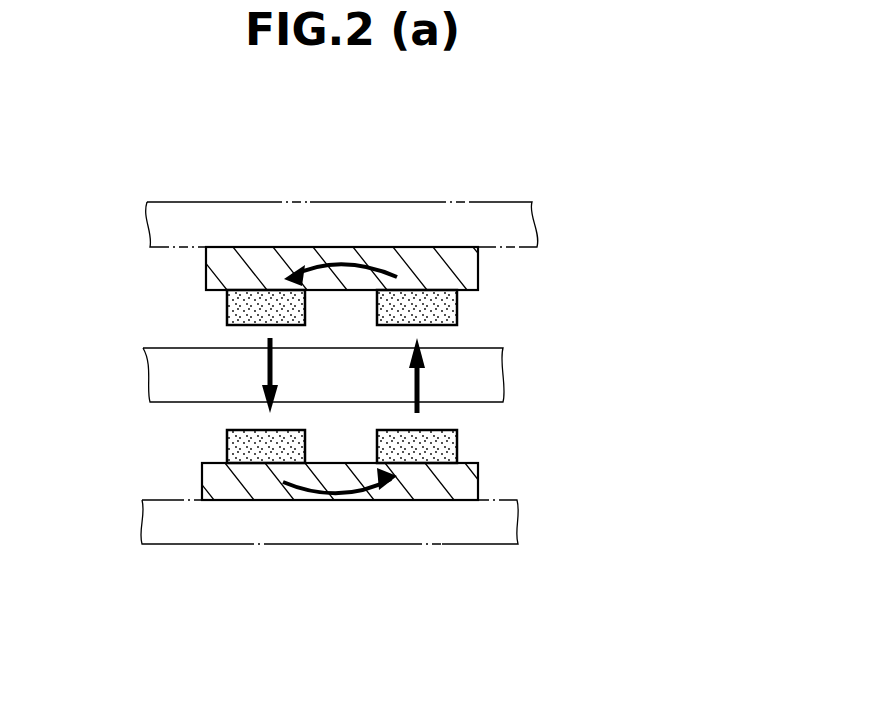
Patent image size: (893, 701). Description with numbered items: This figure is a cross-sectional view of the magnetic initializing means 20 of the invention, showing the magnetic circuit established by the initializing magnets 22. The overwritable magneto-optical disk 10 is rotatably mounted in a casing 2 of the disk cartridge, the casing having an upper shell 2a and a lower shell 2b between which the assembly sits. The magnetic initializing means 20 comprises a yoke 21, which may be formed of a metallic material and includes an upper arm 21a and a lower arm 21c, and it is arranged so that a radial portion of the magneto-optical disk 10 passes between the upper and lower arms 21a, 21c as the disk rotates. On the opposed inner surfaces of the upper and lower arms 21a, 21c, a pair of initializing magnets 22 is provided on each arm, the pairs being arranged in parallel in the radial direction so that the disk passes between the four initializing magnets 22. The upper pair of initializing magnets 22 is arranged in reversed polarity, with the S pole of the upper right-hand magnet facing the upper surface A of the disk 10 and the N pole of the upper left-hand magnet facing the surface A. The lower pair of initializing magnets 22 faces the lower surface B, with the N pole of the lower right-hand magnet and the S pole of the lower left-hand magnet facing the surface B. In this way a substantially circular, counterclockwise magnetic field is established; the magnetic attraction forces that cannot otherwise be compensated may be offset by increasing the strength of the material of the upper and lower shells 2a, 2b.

The casing 2 is at (339, 378).
The upper shell 2a is at (392, 202).
The lower shell 2b is at (443, 547).
The overwritable magneto-optical disk 10 is at (487, 380).
The magnetic initializing means 20 is at (342, 469).
The yoke 21 is at (378, 213).
The upper arm 21a is at (465, 280).
The lower arm 21c is at (463, 487).
The initializing magnet 22 is at (230, 305).
The upper surface A is at (182, 343).
The lower surface B is at (472, 412).